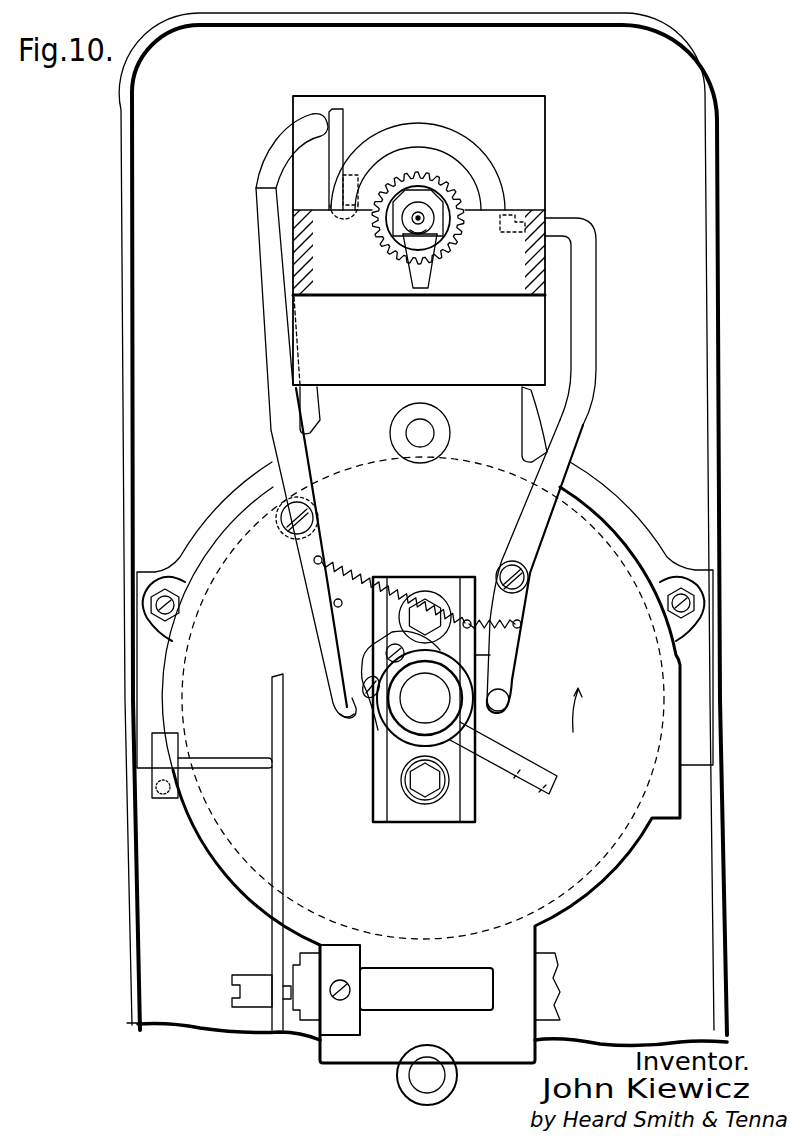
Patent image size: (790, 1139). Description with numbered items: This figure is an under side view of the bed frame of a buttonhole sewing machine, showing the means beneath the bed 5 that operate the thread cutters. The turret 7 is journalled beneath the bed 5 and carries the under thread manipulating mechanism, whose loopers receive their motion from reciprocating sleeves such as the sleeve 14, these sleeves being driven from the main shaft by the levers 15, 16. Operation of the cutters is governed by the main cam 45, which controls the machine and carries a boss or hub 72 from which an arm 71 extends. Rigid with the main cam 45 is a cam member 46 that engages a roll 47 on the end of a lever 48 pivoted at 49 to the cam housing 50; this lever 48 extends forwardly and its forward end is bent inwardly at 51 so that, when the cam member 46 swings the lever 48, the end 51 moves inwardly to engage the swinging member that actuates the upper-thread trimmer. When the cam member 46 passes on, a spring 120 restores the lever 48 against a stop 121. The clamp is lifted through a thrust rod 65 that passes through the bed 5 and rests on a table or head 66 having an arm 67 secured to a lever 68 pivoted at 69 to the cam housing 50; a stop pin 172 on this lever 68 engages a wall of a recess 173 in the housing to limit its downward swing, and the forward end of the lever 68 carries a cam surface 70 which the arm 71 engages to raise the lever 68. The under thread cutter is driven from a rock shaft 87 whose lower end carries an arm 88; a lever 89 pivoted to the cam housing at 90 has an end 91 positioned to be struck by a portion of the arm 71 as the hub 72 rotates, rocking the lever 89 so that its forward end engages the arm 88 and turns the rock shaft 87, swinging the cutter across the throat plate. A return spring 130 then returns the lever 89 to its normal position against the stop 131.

The bed 5 is at (722, 308).
The turret 7 is at (456, 182).
The vertically-reciprocating sleeve 14 is at (416, 219).
The lever 15 is at (407, 258).
The lever 16 is at (422, 280).
The main cam 45 is at (598, 872).
The cam member 46 is at (380, 660).
The roll 47 is at (509, 698).
The lever 48 is at (546, 516).
The pivot 49 is at (527, 567).
The cam housing 50 is at (610, 559).
The inwardly-bent end 51 is at (564, 220).
The thrust rod 65 is at (156, 787).
The table or head 66 is at (152, 745).
The arm 67 is at (236, 769).
The lever 68 is at (272, 860).
The pivot 69 is at (238, 985).
The cam surface 70 is at (272, 681).
The arm 71 is at (524, 776).
The boss or hub 72 is at (404, 720).
The rock shaft 87 is at (340, 206).
The arm 88 is at (338, 130).
The lever 89 is at (270, 415).
The pivot 90 is at (296, 528).
The end of lever 91 is at (342, 704).
The spring 120 is at (487, 613).
The stop 121 is at (485, 648).
The return spring 130 is at (371, 577).
The stop 131 is at (334, 603).
The stop pin 172 is at (292, 1002).
The recess 173 is at (292, 1000).